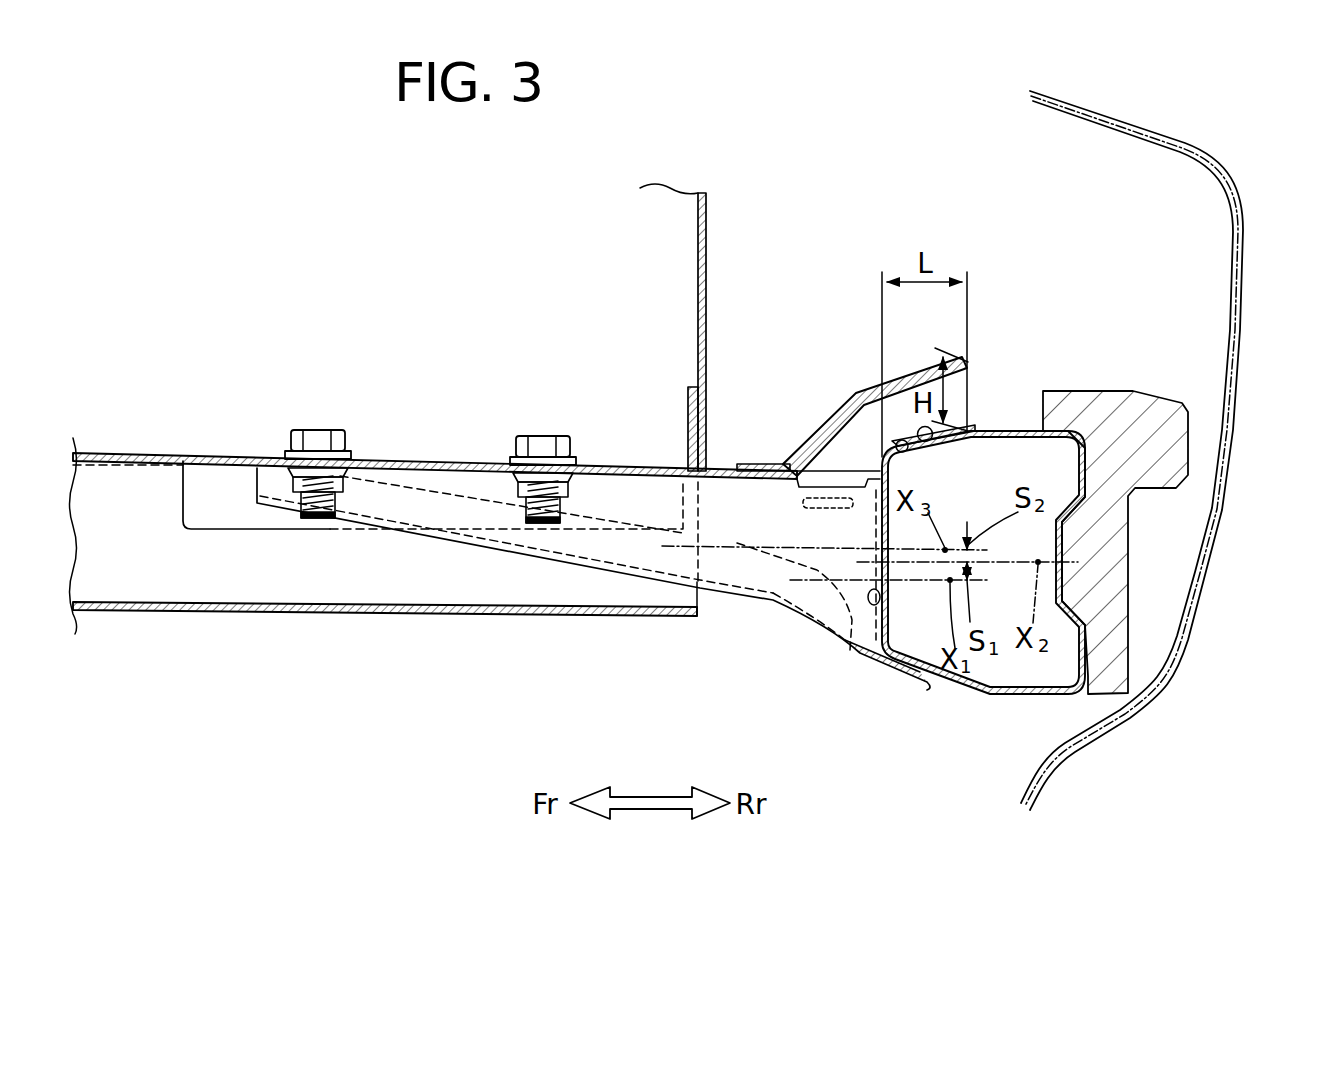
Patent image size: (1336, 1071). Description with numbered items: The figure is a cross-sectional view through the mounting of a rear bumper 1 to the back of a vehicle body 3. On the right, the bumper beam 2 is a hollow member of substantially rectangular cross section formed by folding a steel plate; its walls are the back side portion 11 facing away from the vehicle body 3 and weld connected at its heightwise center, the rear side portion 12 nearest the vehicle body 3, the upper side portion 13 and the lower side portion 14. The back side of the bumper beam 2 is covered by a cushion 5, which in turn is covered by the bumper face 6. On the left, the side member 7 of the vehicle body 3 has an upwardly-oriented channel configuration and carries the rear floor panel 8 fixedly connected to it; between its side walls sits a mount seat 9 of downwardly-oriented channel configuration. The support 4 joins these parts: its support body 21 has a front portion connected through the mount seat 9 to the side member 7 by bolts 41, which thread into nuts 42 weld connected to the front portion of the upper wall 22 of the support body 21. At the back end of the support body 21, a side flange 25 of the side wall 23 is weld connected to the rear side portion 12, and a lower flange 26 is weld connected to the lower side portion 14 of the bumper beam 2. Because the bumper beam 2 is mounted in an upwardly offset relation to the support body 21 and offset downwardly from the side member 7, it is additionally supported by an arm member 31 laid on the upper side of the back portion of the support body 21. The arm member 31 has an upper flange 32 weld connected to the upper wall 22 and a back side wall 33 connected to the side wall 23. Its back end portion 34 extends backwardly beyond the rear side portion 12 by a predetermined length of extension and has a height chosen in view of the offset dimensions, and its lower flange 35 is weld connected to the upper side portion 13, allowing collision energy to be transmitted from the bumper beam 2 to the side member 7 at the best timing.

The bumper 1 is at (1246, 152).
The bumper beam 2 is at (948, 695).
The vehicle body 3 is at (712, 256).
The support 4 is at (719, 617).
The cushion 5 is at (1117, 392).
The bumper face 6 is at (1243, 327).
The side member 7 is at (188, 612).
The rear floor panel 8 is at (135, 454).
The mount seat 9 is at (240, 530).
The back side portion 11 is at (1066, 586).
The rear side portion 12 is at (889, 592).
The upper side portion 13 is at (1012, 432).
The lower side portion 14 is at (988, 696).
The support body 21 is at (760, 607).
The upper wall 22 is at (720, 476).
The side wall 23 is at (828, 556).
The side flange 25 is at (838, 596).
The lower flange 26 is at (905, 681).
The arm member 31 is at (836, 409).
The upper flange 32 is at (760, 468).
The back side wall 33 is at (832, 487).
The back end portion 34 is at (975, 362).
The lower flange 35 is at (927, 448).
The bolt 41 is at (318, 431).
The nut 42 is at (345, 487).